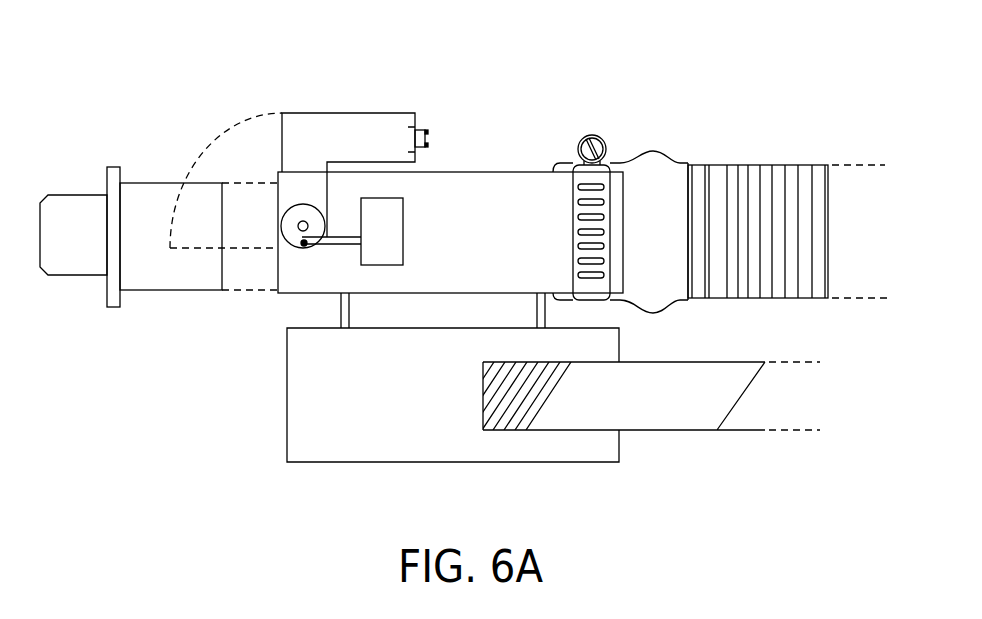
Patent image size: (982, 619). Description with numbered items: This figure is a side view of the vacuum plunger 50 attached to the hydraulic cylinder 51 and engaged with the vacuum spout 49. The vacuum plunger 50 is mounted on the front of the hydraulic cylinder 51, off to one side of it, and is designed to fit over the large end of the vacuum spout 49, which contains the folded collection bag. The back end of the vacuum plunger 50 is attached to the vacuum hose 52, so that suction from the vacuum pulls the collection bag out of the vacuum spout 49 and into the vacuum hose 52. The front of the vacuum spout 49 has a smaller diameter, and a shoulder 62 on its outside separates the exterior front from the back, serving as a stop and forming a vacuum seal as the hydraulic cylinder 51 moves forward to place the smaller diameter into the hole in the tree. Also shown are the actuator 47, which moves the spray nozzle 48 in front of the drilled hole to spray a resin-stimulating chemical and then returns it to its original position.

The actuator 47 is at (392, 230).
The spray nozzle 48 is at (441, 129).
The vacuum spout 49 is at (167, 150).
The vacuum plunger 50 is at (248, 314).
The hydraulic cylinder 51 is at (693, 410).
The vacuum hose 52 is at (774, 159).
The shoulder 62 is at (107, 177).